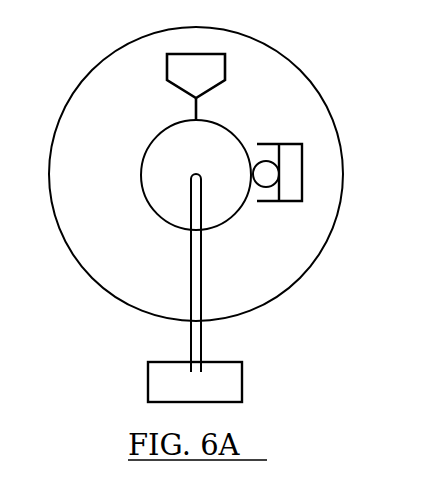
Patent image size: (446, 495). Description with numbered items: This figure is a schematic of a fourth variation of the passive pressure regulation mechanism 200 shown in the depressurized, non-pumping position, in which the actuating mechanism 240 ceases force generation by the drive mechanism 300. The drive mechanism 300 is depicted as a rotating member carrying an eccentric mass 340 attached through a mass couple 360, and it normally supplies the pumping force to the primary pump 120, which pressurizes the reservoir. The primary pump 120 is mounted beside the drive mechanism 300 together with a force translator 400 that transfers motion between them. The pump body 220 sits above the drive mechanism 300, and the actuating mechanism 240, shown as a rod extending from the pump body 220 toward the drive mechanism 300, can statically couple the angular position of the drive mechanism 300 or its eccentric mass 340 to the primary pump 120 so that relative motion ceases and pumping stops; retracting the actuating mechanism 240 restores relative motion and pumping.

The passive pressure regulation mechanism 200 is at (238, 62).
The pump body 220 is at (167, 70).
The actuating mechanism 240 is at (173, 87).
The drive mechanism 300 is at (168, 205).
The mass couple 360 is at (200, 332).
The eccentric mass 340 is at (225, 379).
The primary pump 120 is at (305, 133).
The force translator 400 is at (266, 180).